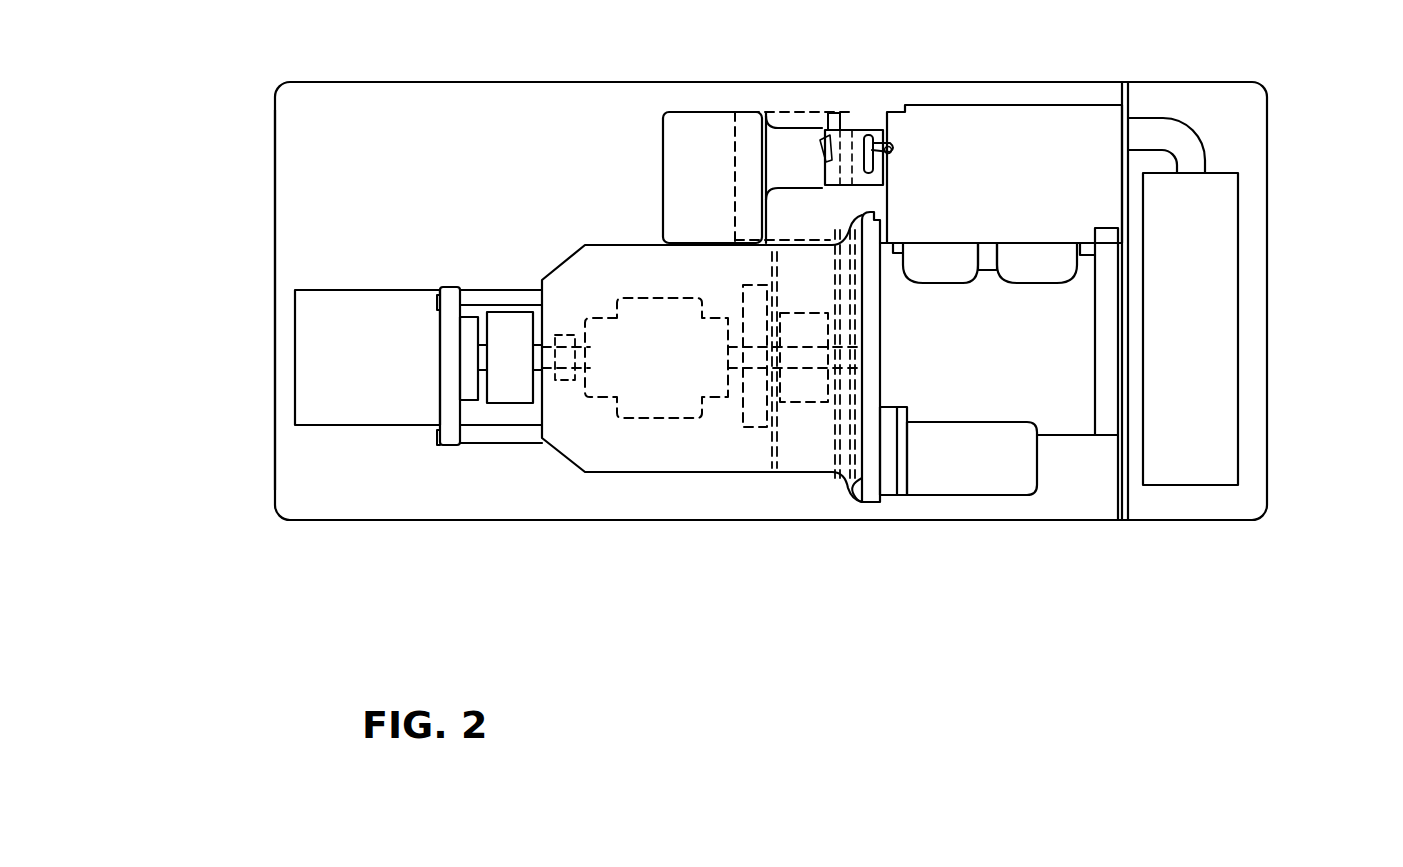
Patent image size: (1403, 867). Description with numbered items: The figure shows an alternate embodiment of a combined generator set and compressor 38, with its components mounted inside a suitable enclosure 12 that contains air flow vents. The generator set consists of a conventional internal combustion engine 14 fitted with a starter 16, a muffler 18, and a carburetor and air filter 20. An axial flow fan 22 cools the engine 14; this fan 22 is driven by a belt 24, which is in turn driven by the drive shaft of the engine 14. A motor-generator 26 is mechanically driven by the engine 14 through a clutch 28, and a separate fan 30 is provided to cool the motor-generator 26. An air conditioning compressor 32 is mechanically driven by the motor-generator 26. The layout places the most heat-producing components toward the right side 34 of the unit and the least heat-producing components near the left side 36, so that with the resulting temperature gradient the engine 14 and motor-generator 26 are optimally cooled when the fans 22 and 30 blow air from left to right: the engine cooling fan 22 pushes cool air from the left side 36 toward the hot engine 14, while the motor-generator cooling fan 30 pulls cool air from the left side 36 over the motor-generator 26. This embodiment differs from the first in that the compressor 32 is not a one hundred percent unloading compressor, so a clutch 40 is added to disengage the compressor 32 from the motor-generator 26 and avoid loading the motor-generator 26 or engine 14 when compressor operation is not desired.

The enclosure 12 is at (1242, 66).
The internal combustion engine 14 is at (1040, 372).
The starter 16 is at (995, 478).
The muffler 18 is at (1195, 437).
The carburetor and air filter 20 is at (693, 125).
The axial flow fan 22 is at (820, 128).
The belt 24 is at (838, 212).
The motor-generator 26 is at (642, 318).
The clutch 28 is at (807, 382).
The fan 30 is at (757, 437).
The air conditioning compressor 32 is at (367, 400).
The right side 34 is at (1292, 298).
The left side 36 is at (275, 318).
The combined generator set and compressor 38 is at (793, 558).
The clutch 40 is at (498, 425).